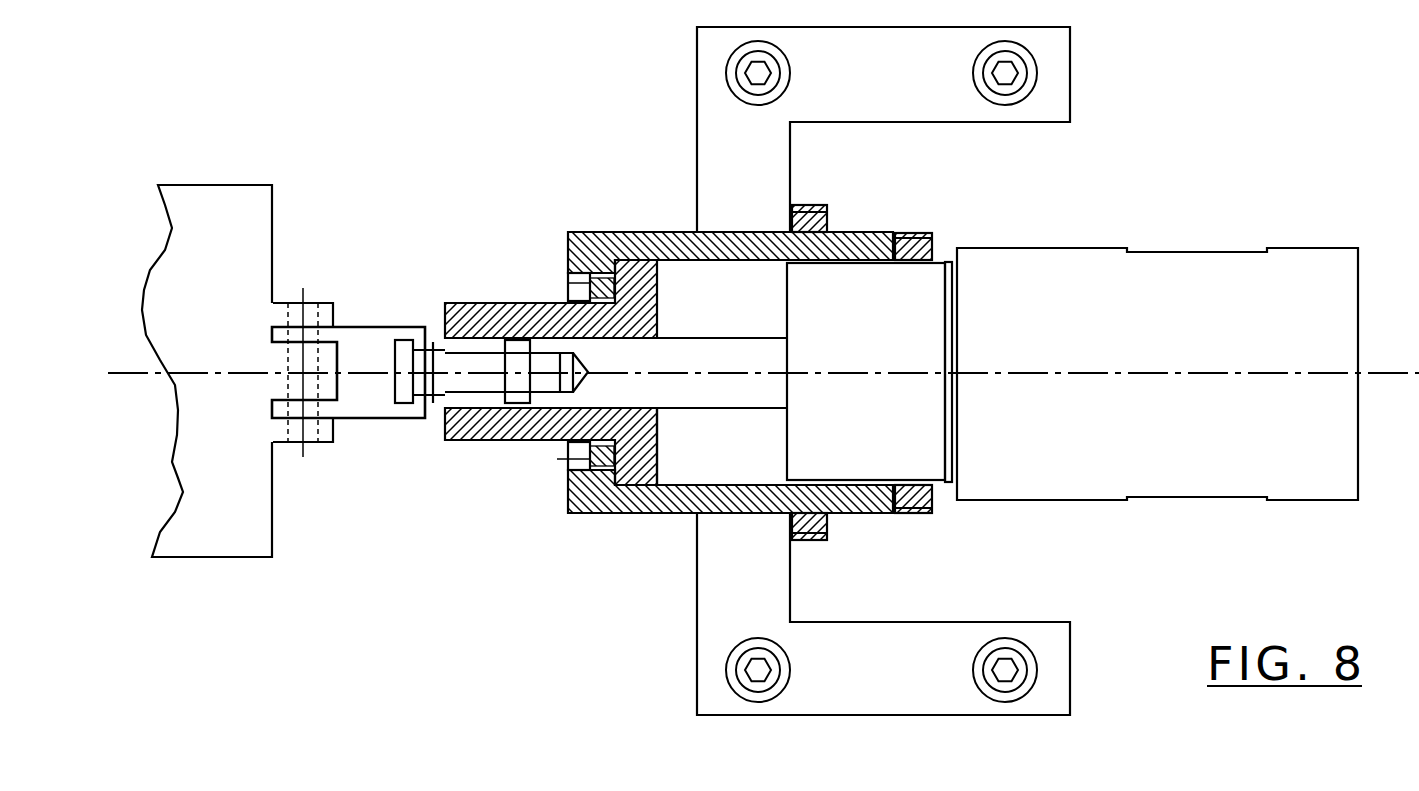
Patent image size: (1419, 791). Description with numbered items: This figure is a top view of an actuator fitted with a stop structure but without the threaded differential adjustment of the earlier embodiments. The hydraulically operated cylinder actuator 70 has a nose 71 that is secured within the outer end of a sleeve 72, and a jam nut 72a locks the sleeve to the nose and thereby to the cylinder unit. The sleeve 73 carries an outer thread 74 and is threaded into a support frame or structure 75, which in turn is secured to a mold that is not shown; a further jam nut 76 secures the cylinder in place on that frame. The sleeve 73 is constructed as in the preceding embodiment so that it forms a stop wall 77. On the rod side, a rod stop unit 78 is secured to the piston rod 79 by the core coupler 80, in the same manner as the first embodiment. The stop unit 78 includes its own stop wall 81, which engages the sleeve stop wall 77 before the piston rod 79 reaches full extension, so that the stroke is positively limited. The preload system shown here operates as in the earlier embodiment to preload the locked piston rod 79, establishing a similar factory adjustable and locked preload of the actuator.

The hydraulically operated cylinder actuator 70 is at (1215, 205).
The nose 71 is at (893, 437).
The sleeve 72 is at (695, 260).
The jam nut 72a is at (927, 232).
The sleeve 73 is at (598, 233).
The outer thread 74 is at (703, 233).
The support frame or structure 75 is at (910, 100).
The jam nut 76 is at (820, 203).
The stop wall 77 is at (568, 283).
The rod stop unit 78 is at (502, 438).
The piston rod 79 is at (740, 392).
The core coupler 80 is at (357, 325).
The stop wall 81 is at (657, 462).